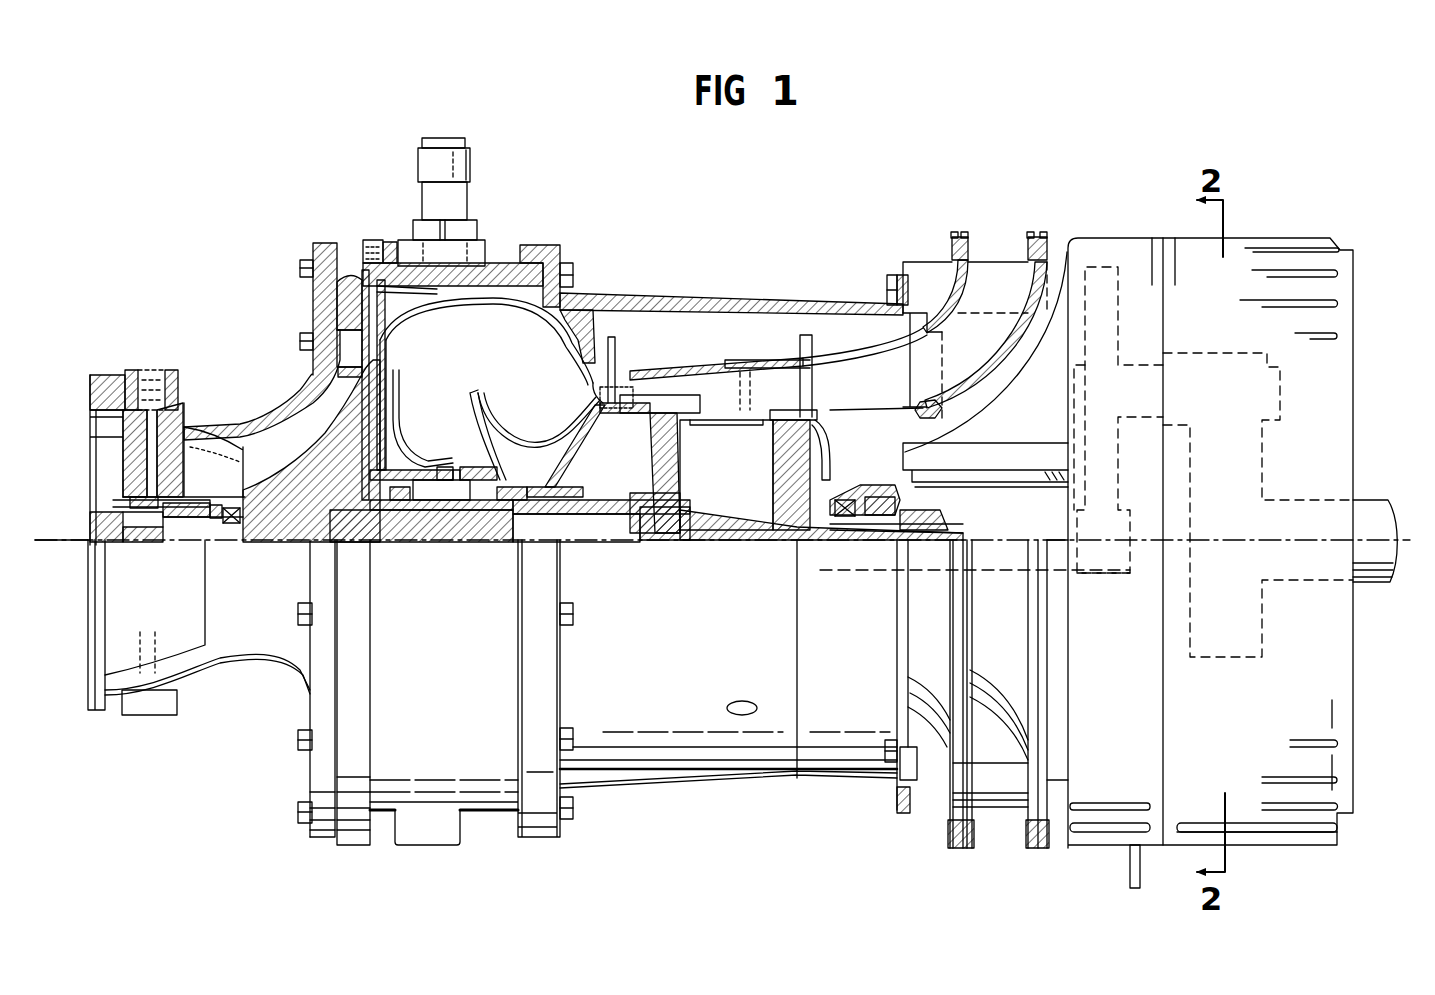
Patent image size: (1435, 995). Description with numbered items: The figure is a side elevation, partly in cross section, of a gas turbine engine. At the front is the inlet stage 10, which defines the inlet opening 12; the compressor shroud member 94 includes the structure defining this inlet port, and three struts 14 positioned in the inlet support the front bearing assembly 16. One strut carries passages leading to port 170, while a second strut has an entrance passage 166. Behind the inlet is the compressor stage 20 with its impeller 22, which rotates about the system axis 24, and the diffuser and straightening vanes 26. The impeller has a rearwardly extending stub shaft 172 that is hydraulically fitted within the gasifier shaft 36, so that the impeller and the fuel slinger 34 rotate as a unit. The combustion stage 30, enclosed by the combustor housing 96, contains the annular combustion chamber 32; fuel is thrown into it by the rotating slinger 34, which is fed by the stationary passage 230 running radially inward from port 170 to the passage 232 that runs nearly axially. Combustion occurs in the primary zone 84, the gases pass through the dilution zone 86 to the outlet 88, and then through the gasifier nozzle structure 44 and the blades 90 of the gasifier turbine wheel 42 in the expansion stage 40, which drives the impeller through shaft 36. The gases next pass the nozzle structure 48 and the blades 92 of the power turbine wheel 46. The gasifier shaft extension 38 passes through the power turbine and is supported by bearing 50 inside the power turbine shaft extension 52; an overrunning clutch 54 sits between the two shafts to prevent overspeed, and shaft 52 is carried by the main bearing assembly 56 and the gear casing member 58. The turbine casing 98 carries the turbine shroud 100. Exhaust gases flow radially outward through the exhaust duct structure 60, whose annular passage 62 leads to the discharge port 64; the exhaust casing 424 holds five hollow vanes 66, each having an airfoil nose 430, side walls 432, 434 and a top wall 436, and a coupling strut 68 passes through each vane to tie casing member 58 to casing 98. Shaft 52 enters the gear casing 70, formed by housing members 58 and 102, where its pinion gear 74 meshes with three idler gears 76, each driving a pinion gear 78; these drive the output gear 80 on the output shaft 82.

The inlet stage 10 is at (112, 360).
The inlet opening 12 is at (88, 442).
The struts 14 is at (180, 428).
The front bearing assembly 16 is at (181, 545).
The compressor stage 20 is at (276, 392).
The impeller 22 is at (298, 372).
The system axis 24 is at (62, 548).
The diffuser and straightening vanes 26 is at (336, 300).
The combustion stage 30 is at (390, 205).
The annular combustion chamber 32 is at (500, 303).
The fuel slinger 34 is at (446, 462).
The shaft 36 is at (597, 517).
The gasifier turbine shaft extension 38 is at (760, 520).
The turbine or expansion stage 40 is at (673, 282).
The gasifier turbine wheel 42 is at (670, 492).
The gasifier nozzle structure 44 is at (622, 393).
The power turbine wheel 46 is at (786, 463).
The nozzle structure 48 is at (752, 397).
The bearing 50 is at (915, 517).
The power turbine shaft extension 52 is at (853, 575).
The overrunning clutch 54 is at (947, 521).
The main bearing assembly 56 is at (900, 500).
The gear casing member 58 is at (1107, 842).
The exhaust duct structure 60 is at (934, 238).
The annular passage 62 is at (883, 400).
The discharge port 64 is at (985, 842).
The hollow vanes 66 is at (980, 240).
The coupling strut 68 is at (925, 275).
The gear casing 70 is at (1160, 228).
The pinion gear 74 is at (1106, 574).
The idler gears 76 is at (1108, 266).
The pinion gears 78 is at (1216, 353).
The output gear 80 is at (1262, 476).
The output shaft 82 is at (1378, 500).
The primary zone 84 is at (458, 422).
The dilution zone 86 is at (519, 384).
The outlet 88 is at (598, 392).
The blades 90 is at (665, 398).
The blades 92 is at (797, 408).
The compressor shroud member 94 is at (280, 673).
The combustor housing 96 is at (502, 818).
The turbine casing 98 is at (722, 790).
The turbine shroud 100 is at (708, 368).
The housing member 102 is at (1302, 842).
The entrance passage 166 is at (152, 388).
The port 170 is at (368, 250).
The stub shaft 172 is at (486, 530).
The passage 230 is at (333, 263).
The passage 232 is at (372, 500).
The exhaust casing 424 is at (963, 383).
The nose 430 is at (912, 368).
The side wall 432 is at (986, 283).
The side wall 434 is at (985, 750).
The top wall 436 is at (1010, 247).